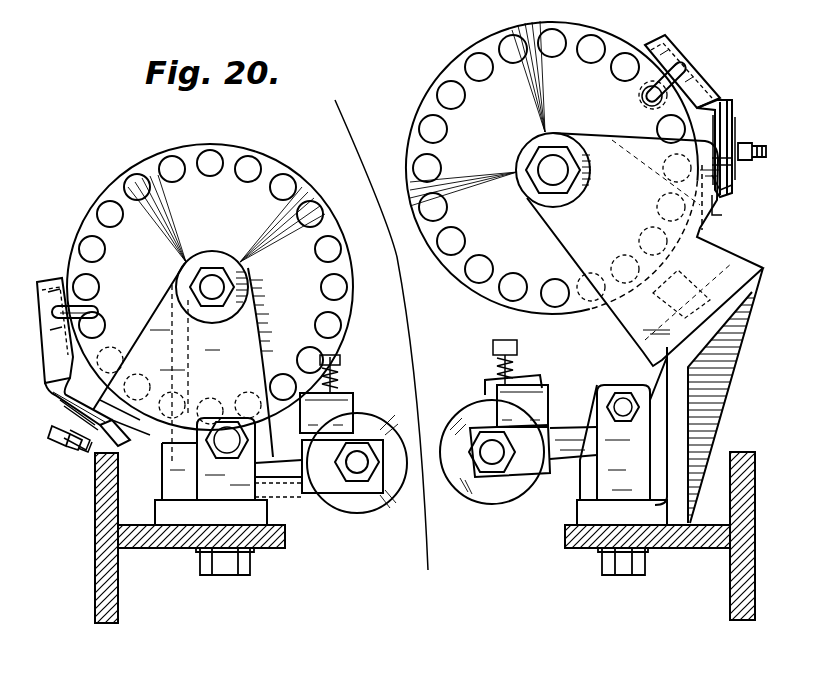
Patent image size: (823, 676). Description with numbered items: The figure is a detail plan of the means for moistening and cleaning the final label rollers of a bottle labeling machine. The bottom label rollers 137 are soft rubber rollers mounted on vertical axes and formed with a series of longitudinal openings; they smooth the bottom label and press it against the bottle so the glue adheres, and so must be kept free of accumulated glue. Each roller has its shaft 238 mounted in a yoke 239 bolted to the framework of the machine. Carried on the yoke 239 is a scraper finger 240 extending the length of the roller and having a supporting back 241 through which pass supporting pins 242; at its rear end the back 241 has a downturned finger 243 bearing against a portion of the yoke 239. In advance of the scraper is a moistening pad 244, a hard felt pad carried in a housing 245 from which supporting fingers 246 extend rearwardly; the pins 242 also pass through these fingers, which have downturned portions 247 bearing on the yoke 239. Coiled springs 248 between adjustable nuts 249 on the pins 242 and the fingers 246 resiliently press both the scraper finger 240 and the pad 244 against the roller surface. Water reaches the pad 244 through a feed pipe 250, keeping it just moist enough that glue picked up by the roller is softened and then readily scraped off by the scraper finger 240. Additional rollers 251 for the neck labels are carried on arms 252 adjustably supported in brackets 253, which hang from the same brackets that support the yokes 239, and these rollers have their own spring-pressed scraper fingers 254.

The bottom label rollers 137 is at (275, 168).
The shafts 238 is at (216, 287).
The yokes 239 is at (270, 336).
The scraper finger 240 is at (668, 132).
The supporting back 241 is at (75, 404).
The supporting pins 242 is at (62, 442).
The downturned finger 243 is at (128, 446).
The moistening pad 244 is at (58, 292).
The housing 245 is at (45, 285).
The supporting fingers 246 is at (56, 392).
The downturned portions 247 is at (125, 410).
The coiled springs 248 is at (52, 432).
The adjustable nuts 249 is at (80, 451).
The feed pipes 250 is at (90, 310).
The rollers 251 is at (365, 505).
The arms 252 is at (295, 490).
The brackets 253 is at (222, 418).
The spring-pressed scraper fingers 254 is at (350, 395).